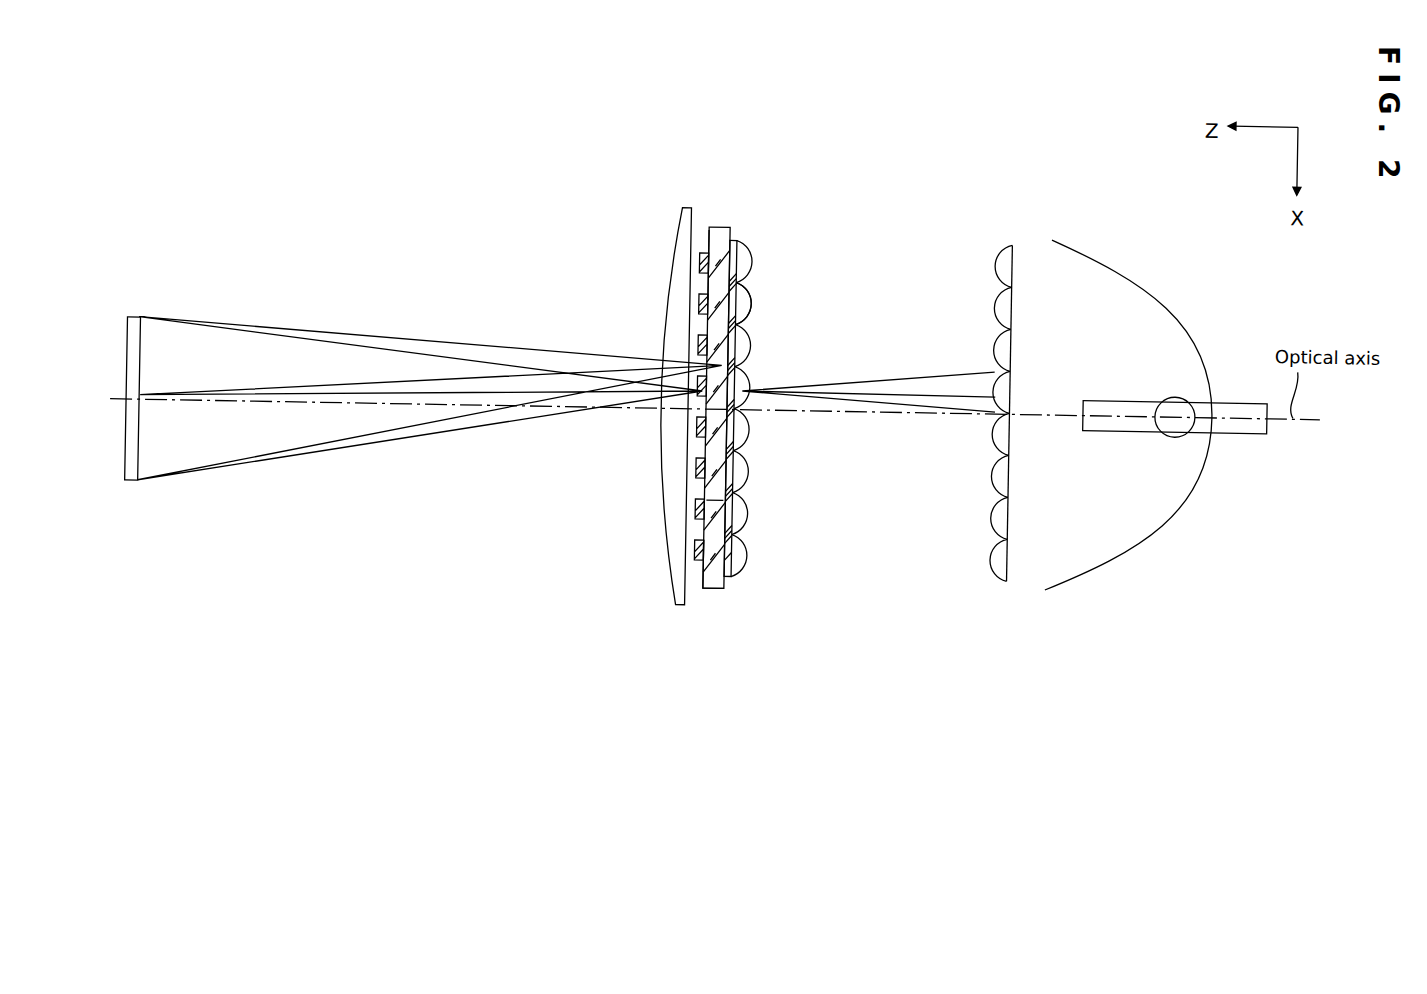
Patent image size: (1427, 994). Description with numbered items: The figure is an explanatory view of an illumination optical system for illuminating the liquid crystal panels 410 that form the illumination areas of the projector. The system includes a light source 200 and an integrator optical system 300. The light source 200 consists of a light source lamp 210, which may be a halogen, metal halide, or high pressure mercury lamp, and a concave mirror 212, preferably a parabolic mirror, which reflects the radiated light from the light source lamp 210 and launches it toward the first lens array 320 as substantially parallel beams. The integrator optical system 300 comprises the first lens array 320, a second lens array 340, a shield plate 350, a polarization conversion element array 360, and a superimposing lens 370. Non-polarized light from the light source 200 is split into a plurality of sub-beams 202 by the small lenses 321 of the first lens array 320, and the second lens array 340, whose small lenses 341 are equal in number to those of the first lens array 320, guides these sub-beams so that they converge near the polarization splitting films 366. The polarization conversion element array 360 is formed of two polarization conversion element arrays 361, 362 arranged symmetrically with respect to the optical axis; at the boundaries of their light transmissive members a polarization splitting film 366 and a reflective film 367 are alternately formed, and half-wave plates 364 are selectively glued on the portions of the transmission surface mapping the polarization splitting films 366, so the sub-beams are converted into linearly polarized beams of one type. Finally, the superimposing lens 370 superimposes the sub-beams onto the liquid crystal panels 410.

The light source 200 is at (1089, 379).
The sub-beams 202 is at (898, 377).
The light source lamp 210 is at (1183, 429).
The concave mirror 212 is at (1153, 294).
The integrator optical system 300 is at (732, 348).
The first lens array 320 is at (969, 375).
The small lenses 321 is at (990, 257).
The second lens array 340 is at (742, 250).
The small lenses 341 is at (748, 300).
The shield plate 350 is at (732, 240).
The polarization conversion element array 360 is at (717, 226).
The polarization conversion element array 361 is at (705, 237).
The polarization conversion element array 362 is at (720, 588).
The half-wave plates 364 is at (701, 306).
The polarization splitting film 366 is at (715, 509).
The reflective film 367 is at (747, 551).
The superimposing lens 370 is at (670, 270).
The liquid crystal panels 410 is at (131, 493).